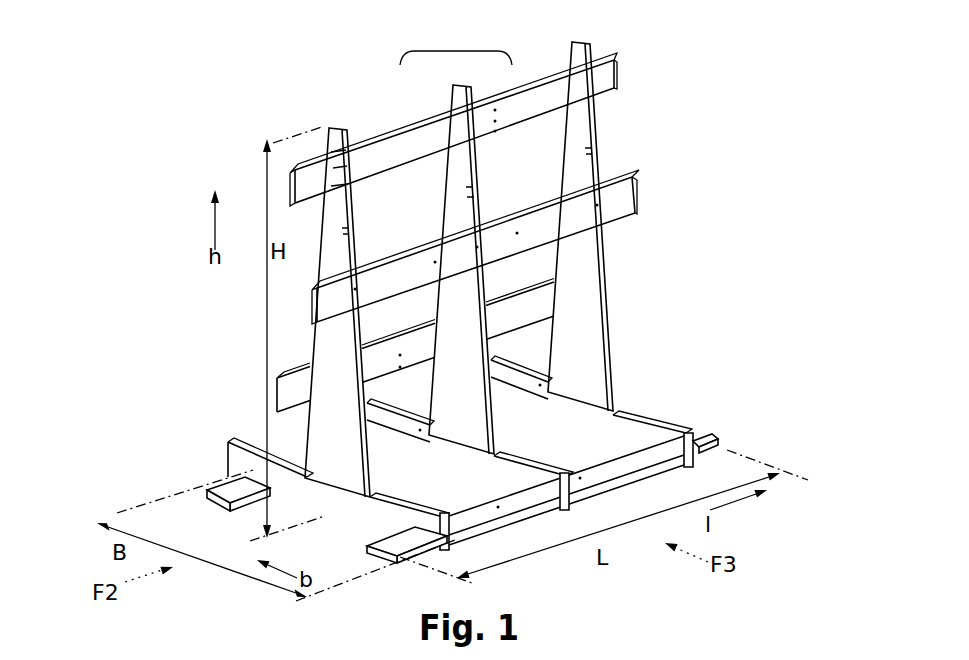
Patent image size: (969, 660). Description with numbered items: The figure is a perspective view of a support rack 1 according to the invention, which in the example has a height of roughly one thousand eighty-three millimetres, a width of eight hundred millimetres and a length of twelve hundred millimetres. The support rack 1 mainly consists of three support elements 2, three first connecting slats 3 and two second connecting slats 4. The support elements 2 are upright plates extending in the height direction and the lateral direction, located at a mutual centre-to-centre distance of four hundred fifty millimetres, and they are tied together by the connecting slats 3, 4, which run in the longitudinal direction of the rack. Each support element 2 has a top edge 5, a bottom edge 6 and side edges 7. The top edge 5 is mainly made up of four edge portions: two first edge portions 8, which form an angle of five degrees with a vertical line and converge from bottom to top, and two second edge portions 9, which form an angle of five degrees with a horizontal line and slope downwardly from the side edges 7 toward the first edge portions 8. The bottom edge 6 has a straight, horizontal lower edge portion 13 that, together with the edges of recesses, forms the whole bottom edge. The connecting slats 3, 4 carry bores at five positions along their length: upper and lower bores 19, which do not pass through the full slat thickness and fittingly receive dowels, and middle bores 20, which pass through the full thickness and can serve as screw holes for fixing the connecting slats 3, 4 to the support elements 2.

The support rack 1 is at (453, 287).
The support element 2 is at (440, 391).
The first connecting slat 3 is at (290, 393).
The second connecting slat 4 is at (228, 481).
The top edge 5 is at (456, 87).
The bottom edge 6 is at (217, 512).
The side edge 7 is at (268, 510).
The first edge portion 8 is at (432, 392).
The second edge portion 9 is at (520, 300).
The lower edge portion 13 is at (612, 368).
The upper and lower bores 19 is at (417, 138).
The middle bore 20 is at (415, 151).